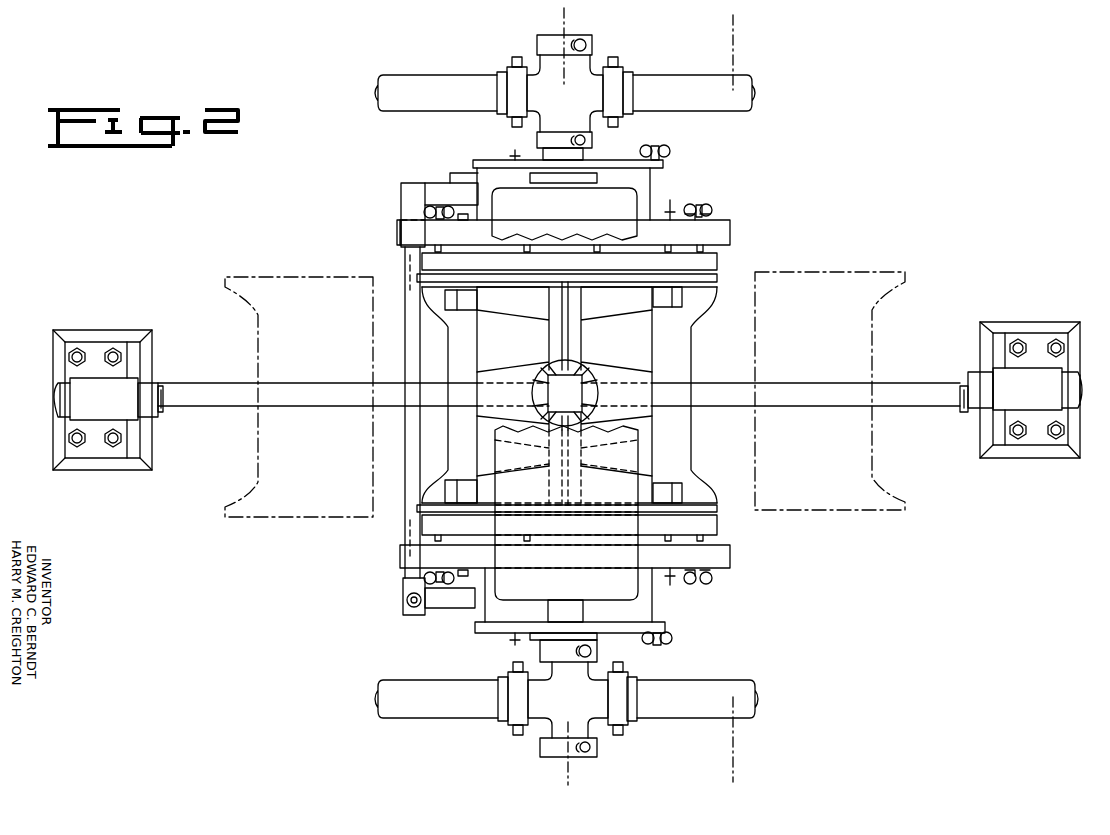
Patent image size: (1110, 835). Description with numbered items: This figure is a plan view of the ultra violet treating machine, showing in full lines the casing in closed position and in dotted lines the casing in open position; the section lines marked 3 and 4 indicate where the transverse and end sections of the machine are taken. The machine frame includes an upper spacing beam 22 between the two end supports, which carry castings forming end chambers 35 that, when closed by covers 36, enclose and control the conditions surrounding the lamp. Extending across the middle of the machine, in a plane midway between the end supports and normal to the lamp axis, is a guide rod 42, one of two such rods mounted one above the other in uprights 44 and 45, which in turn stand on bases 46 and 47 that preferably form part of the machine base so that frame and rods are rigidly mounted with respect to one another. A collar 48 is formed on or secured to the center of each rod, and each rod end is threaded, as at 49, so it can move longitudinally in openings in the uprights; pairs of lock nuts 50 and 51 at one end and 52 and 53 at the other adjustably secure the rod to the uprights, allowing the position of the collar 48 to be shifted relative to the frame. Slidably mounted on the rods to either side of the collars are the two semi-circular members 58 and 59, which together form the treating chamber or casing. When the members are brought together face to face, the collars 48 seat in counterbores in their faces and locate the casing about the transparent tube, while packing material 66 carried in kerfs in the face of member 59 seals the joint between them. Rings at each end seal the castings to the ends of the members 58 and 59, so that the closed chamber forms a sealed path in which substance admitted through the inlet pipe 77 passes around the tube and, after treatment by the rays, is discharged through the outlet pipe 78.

The section line 3- 3 is at (735, 31).
The section line 4- 4 is at (566, 16).
The upper spacing beam 22 is at (635, 200).
The end chamber 35 is at (643, 185).
The cover 36 is at (617, 163).
The guide rod 42 is at (216, 403).
The upright 44 is at (120, 428).
The upright 45 is at (1010, 420).
The base 46 is at (82, 462).
The base 47 is at (1042, 455).
The collar 48 is at (570, 405).
The threaded end 49 is at (160, 410).
The lock nut 50 is at (60, 392).
The lock nut 51 is at (152, 388).
The lock nut 52 is at (978, 380).
The lock nut 53 is at (1068, 380).
The semi-circular member 58 is at (855, 282).
The semi-circular member 59 is at (296, 284).
The packing material 66 is at (566, 352).
The inlet pipe 77 is at (558, 121).
The outlet pipe 78 is at (557, 667).